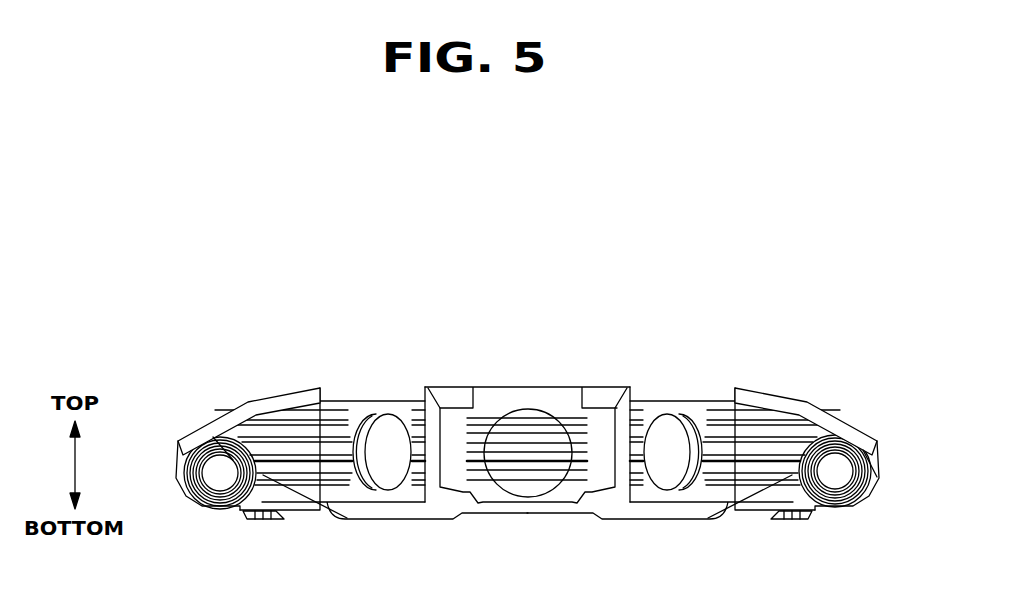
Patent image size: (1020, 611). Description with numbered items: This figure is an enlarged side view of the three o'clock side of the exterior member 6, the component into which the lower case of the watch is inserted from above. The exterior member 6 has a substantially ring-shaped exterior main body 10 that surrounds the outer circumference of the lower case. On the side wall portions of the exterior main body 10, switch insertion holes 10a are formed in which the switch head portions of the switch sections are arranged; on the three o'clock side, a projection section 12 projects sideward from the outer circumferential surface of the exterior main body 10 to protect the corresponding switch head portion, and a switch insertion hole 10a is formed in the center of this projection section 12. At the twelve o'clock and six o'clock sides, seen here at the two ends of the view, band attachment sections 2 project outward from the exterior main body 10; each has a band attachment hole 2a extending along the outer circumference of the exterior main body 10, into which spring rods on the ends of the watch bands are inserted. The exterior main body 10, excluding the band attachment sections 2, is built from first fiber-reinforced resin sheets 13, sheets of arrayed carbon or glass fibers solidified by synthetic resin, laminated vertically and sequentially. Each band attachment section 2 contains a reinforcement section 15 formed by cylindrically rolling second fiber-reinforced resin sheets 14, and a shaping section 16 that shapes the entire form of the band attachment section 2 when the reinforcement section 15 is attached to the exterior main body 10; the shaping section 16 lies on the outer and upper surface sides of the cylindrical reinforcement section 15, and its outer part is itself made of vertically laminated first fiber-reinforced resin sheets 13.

The band attachment section 2 is at (168, 438).
The band attachment hole 2a is at (220, 480).
The exterior member 6 is at (362, 370).
The exterior main body 10 is at (645, 372).
The switch insertion hole 10a is at (393, 472).
The projection section 12 is at (519, 395).
The first fiber-reinforced resin sheet 13 is at (332, 456).
The second fiber-reinforced resin sheet 14 is at (233, 460).
The reinforcement section 15 is at (185, 497).
The shaping section 16 is at (197, 432).